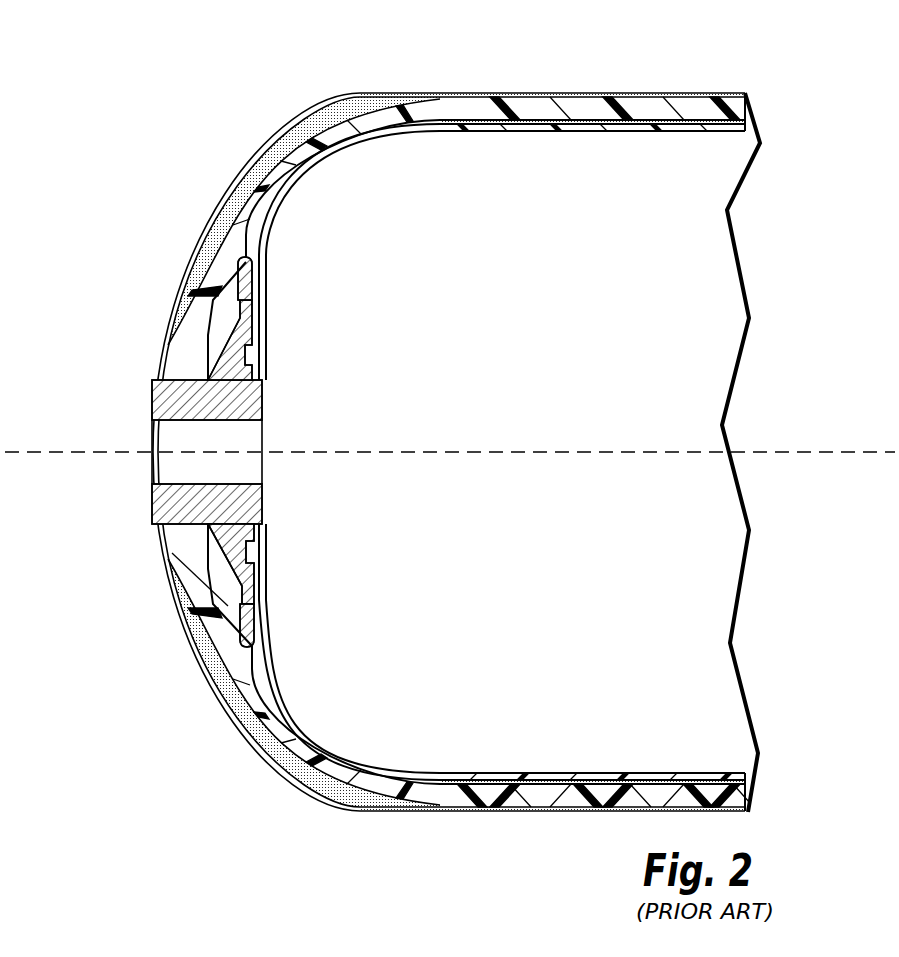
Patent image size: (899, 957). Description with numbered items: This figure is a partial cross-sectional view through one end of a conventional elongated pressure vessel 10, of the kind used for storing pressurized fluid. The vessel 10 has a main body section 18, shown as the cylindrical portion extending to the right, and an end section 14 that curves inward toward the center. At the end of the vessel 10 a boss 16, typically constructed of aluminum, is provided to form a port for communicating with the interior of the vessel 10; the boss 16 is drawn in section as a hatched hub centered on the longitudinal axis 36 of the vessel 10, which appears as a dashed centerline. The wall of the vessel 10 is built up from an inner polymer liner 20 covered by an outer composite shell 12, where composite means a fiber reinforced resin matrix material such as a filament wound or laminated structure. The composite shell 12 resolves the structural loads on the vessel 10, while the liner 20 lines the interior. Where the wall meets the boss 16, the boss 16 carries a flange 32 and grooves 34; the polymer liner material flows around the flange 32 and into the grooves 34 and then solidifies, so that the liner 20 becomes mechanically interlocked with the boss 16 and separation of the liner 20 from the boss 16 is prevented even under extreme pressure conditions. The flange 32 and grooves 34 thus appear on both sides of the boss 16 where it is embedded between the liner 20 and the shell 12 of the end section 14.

The pressure vessel 10 is at (178, 160).
The outer composite shell 12 is at (483, 427).
The end section 14 is at (247, 158).
The boss 16 is at (217, 455).
The main body section 18 is at (618, 94).
The inner polymer liner 20 is at (752, 125).
The flange 32 is at (253, 286).
The grooves 34 is at (215, 318).
The longitudinal axis 36 is at (37, 455).